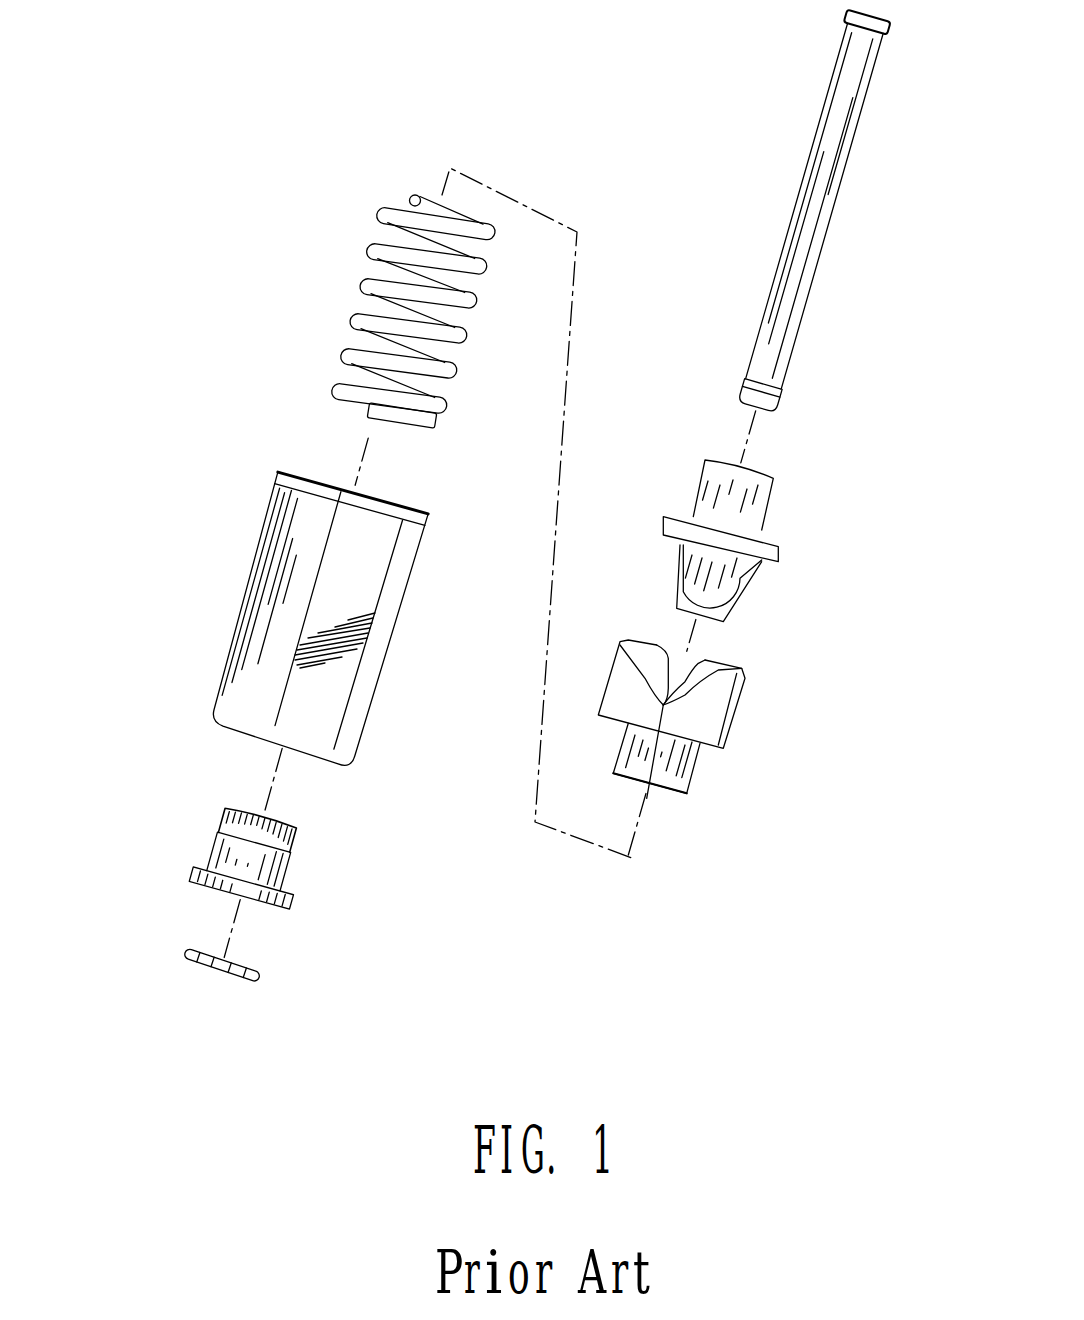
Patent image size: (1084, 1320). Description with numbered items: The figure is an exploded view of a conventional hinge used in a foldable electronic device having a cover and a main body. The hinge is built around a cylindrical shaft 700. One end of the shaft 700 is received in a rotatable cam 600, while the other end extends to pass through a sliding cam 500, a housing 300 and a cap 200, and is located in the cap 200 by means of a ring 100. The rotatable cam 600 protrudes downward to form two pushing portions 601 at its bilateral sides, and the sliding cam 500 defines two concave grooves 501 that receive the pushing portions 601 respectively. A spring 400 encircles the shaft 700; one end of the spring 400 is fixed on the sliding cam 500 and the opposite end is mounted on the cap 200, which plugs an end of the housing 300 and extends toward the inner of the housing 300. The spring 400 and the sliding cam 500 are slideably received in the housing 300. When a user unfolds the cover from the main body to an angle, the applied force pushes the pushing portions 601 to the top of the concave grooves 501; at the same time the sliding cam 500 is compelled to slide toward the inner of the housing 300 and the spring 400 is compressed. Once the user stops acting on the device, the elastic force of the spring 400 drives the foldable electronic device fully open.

The ring 100 is at (187, 955).
The cap 200 is at (215, 868).
The housing 300 is at (272, 623).
The spring 400 is at (357, 290).
The sliding cam 500 is at (752, 733).
The concave grooves 501 is at (725, 668).
The rotatable cam 600 is at (787, 522).
The pushing portions 601 is at (708, 595).
The cylindrical shaft 700 is at (805, 238).